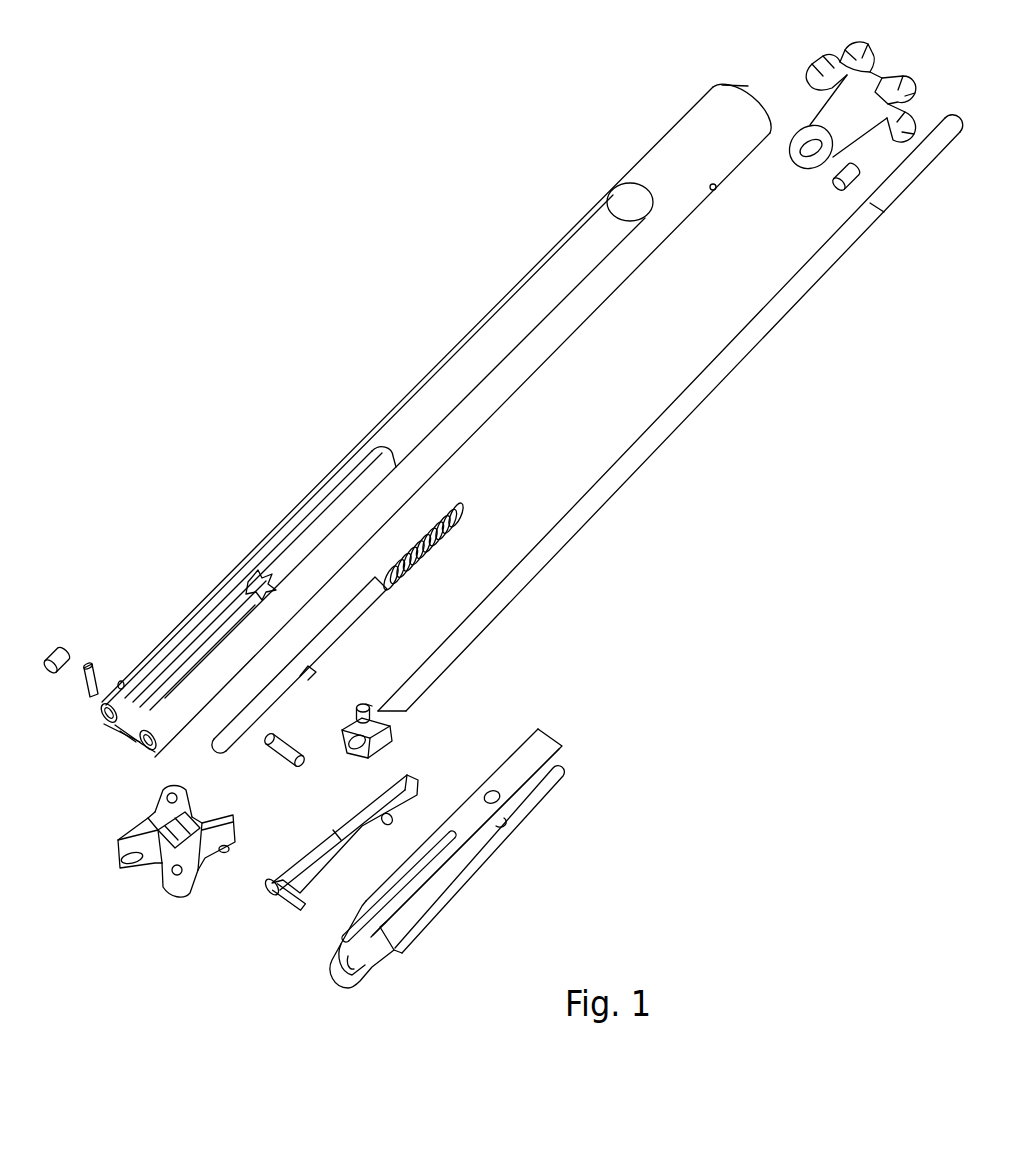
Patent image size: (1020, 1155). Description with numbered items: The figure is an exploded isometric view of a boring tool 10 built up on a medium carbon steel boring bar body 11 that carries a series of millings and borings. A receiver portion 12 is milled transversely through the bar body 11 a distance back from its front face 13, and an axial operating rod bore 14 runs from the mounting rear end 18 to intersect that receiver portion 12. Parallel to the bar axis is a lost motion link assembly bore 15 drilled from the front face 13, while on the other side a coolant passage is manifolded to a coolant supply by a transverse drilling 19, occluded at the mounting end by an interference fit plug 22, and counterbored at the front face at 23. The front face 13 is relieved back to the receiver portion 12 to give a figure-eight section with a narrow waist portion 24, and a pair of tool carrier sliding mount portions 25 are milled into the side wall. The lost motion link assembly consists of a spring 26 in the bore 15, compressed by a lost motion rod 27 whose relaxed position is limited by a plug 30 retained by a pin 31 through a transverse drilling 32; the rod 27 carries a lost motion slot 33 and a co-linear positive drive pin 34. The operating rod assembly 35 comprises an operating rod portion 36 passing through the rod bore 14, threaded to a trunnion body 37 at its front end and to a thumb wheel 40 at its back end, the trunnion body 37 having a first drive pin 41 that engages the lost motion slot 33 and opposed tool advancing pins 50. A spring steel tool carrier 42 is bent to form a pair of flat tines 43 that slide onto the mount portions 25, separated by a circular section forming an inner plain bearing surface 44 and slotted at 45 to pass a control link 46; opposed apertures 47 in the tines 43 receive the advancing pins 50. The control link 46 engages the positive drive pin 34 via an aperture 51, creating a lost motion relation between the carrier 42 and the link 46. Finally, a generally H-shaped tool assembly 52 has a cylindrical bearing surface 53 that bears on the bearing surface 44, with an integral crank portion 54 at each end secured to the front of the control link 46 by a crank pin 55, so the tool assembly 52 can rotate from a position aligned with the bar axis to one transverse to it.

The boring tool 10 is at (500, 254).
The boring bar body 11 is at (683, 133).
The receiver portion 12 is at (215, 638).
The front face 13 is at (118, 732).
The operating rod bore 14 is at (264, 574).
The lost motion link assembly bore 15 is at (98, 706).
The mounting rear end 18 is at (747, 88).
The transverse drilling 19 is at (714, 190).
The interference fit plug 22 is at (841, 190).
The counterbore 23 is at (148, 748).
The waist portion 24 is at (126, 745).
The tool carrier sliding mount portions 25 is at (372, 460).
The spring 26 is at (438, 548).
The lost motion rod 27 is at (365, 615).
The plug 30 is at (68, 654).
The pin 31 is at (95, 668).
The transverse drilling 32 is at (124, 682).
The lost motion slot 33 is at (312, 676).
The positive drive pin 34 is at (284, 758).
The operating rod assembly 35 is at (845, 282).
The operating rod portion 36 is at (874, 207).
The trunnion body 37 is at (395, 740).
The thumb wheel 40 is at (876, 80).
The first drive pin 41 is at (352, 716).
The tool carrier 42 is at (558, 780).
The flat tines 43 is at (548, 745).
The inner plain bearing surface 44 is at (374, 970).
The slot 45 is at (430, 880).
The control link 46 is at (344, 836).
The opposed apertures 47 is at (488, 792).
The tool advancing pins 50 is at (377, 707).
The aperture 51 is at (392, 820).
The tool assembly 52 is at (192, 904).
The bearing surface 53 is at (162, 870).
The crank portion 54 is at (214, 852).
The crank pin 55 is at (296, 906).